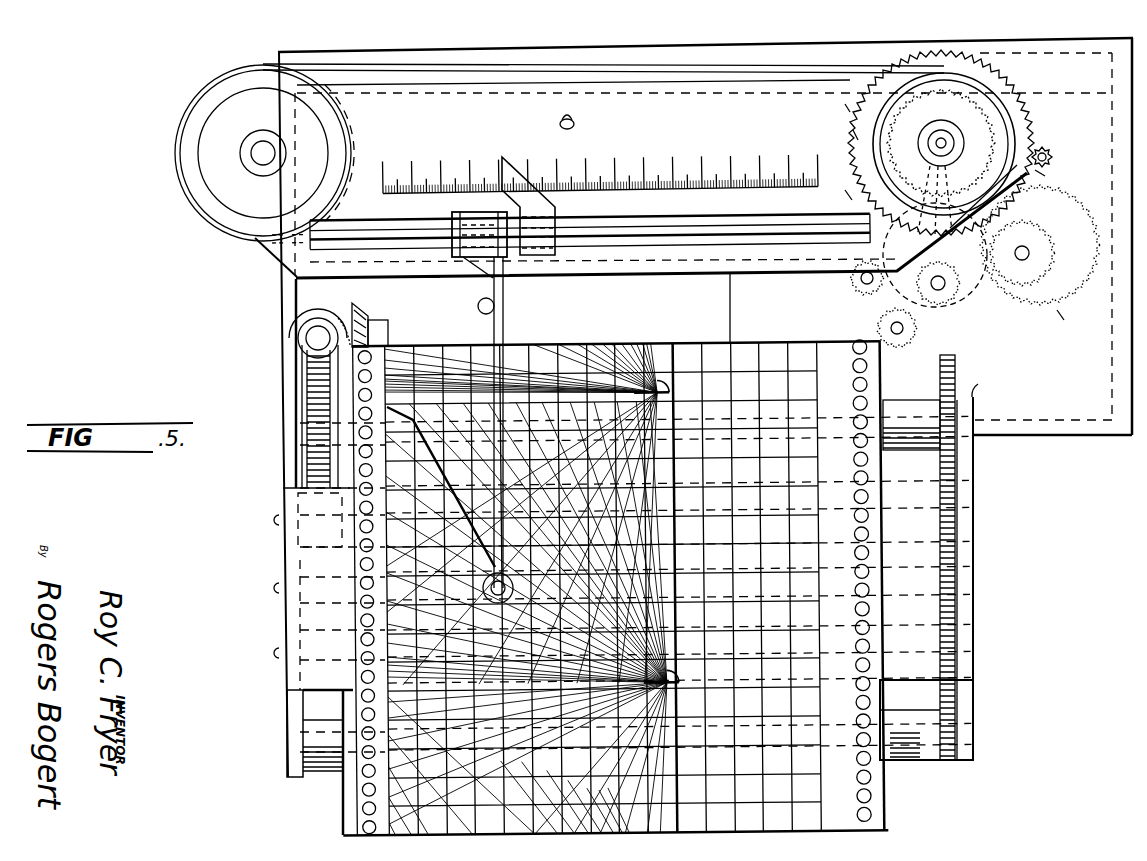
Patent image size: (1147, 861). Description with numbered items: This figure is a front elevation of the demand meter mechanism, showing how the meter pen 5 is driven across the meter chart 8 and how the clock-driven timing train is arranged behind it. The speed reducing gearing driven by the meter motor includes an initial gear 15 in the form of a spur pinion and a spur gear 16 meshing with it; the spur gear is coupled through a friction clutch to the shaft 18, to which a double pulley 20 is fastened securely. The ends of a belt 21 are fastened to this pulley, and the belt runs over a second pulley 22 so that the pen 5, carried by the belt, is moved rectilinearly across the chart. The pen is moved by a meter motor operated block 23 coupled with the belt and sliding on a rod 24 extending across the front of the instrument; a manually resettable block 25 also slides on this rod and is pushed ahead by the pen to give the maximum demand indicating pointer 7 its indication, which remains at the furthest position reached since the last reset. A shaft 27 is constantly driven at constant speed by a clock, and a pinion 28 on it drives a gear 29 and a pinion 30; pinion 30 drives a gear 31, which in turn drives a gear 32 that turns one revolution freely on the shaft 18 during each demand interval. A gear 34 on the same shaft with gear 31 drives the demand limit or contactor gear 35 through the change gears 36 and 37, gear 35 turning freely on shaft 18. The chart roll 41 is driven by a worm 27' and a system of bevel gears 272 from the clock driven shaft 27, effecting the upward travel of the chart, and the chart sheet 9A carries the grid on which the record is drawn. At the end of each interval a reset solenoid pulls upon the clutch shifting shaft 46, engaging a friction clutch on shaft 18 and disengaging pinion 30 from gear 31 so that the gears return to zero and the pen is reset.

The meter pen 5 is at (495, 306).
The maximum demand indicating pointer 7 is at (518, 160).
The meter chart 8 is at (566, 158).
The chart sheet 9A is at (775, 787).
The initial gear 15 is at (1053, 156).
The spur gear 16 is at (1025, 115).
The shaft 18 is at (941, 140).
The double pulley 20 is at (1017, 95).
The belt 21 is at (723, 67).
The pulley 22 is at (203, 118).
The meter motor operated block 23 is at (508, 254).
The rod 24 is at (417, 279).
The manually resettable block 25 is at (558, 256).
The shaft 27 is at (893, 337).
The worm 27' is at (282, 398).
The bevel gears 272 is at (350, 312).
The pinion 28 is at (908, 362).
The gear 29 is at (933, 557).
The pinion 30 is at (968, 322).
The gear 31 is at (1063, 320).
The gear 32 is at (845, 108).
The gear 34 is at (1060, 270).
The demand limit or contactor gear 35 is at (855, 135).
The change gear 36 is at (1020, 222).
The change gear 37 is at (1046, 176).
The chart roll 41 is at (342, 797).
The clutch shifting shaft 46 is at (847, 195).